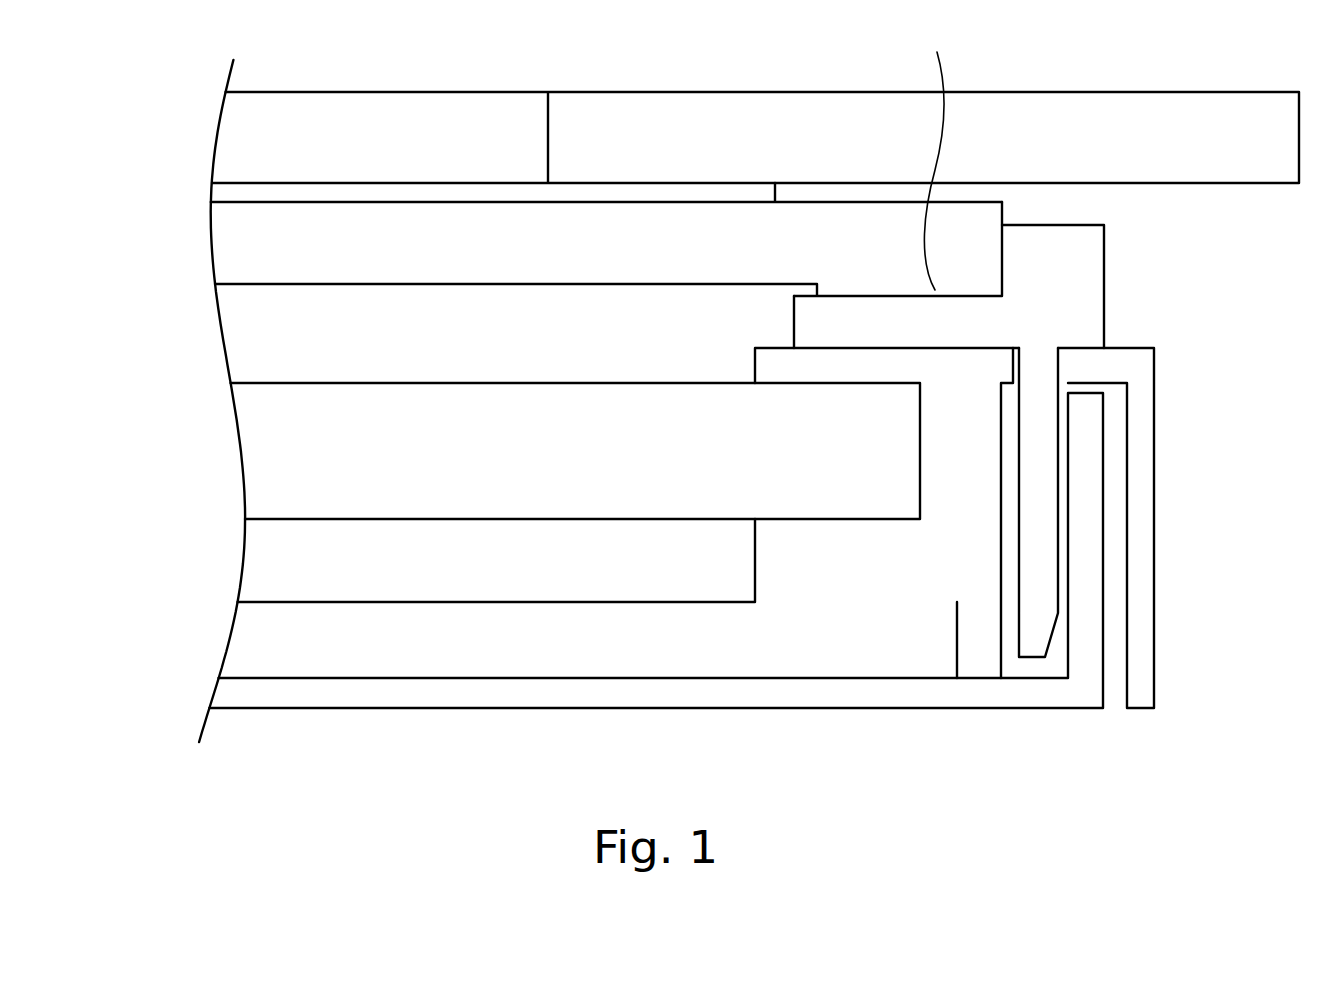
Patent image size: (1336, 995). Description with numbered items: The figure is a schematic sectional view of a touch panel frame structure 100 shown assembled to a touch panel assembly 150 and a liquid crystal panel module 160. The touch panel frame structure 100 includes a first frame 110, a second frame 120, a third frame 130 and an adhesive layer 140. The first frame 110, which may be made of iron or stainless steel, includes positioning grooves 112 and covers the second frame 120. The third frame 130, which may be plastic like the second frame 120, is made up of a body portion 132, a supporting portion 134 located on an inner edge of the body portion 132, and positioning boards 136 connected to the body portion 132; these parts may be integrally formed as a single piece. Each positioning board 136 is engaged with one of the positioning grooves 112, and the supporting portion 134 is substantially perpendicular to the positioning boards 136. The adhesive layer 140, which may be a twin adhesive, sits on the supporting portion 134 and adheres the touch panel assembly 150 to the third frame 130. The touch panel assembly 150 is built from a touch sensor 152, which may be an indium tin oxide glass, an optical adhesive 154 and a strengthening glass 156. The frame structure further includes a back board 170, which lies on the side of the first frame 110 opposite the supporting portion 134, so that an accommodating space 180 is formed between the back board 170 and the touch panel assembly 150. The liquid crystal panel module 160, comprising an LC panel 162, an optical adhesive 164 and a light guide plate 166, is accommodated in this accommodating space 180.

The touch panel frame structure 100 is at (1174, 586).
The first frame 110 is at (1140, 460).
The positioning grooves 112 is at (1006, 365).
The second frame 120 is at (983, 540).
The third frame 130 is at (1257, 242).
The body portion 132 is at (1087, 250).
The supporting portion 134 is at (955, 322).
The positioning boards 136 is at (1045, 441).
The adhesive layer 140 is at (933, 155).
The touch panel assembly 150 is at (100, 128).
The touch sensor 152 is at (222, 250).
The optical adhesive 154 is at (221, 190).
The strengthening glass 156 is at (237, 139).
The liquid crystal panel module 160 is at (120, 465).
The LC panel 162 is at (258, 449).
The optical adhesive 164 is at (257, 556).
The light guide plate 166 is at (243, 637).
The back board 170 is at (225, 696).
The accommodating space 180 is at (272, 339).